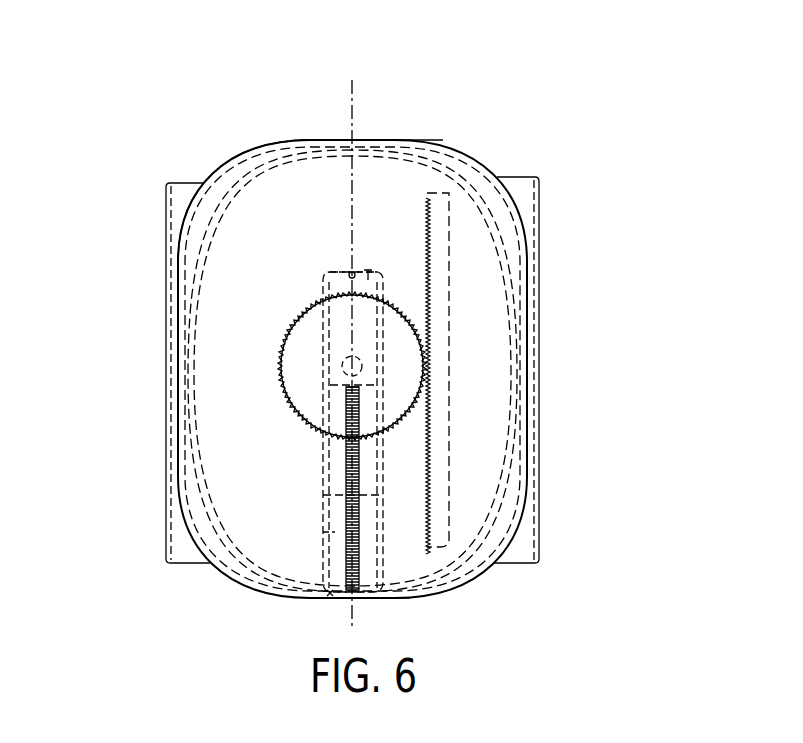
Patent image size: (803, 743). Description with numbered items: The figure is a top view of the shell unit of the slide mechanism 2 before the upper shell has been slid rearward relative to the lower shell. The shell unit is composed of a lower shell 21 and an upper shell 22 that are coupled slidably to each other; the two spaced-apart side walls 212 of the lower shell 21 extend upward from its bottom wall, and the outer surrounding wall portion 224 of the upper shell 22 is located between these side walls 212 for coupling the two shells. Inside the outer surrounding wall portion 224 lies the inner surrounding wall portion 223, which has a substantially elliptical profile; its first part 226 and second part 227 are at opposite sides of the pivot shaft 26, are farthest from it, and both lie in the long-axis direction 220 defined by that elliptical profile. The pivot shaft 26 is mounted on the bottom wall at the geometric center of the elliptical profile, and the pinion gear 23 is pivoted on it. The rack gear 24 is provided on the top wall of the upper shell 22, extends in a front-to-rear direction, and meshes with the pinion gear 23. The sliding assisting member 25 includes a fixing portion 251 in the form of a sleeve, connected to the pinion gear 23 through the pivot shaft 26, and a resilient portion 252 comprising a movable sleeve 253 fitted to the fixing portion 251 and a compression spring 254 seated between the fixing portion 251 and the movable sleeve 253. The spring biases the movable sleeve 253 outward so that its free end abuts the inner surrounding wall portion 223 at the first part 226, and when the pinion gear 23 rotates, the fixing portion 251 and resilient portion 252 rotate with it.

The slide mechanism 2 is at (486, 138).
The lower shell 21 is at (186, 190).
The upper shell 22 is at (384, 137).
The long-axis direction 220 is at (336, 340).
The inner surrounding wall portion 223 is at (208, 221).
The outer surrounding wall portion 224 is at (236, 152).
The second part 227 is at (340, 140).
The first part 226 is at (365, 600).
The side walls 212 is at (170, 443).
The rack gear 24 is at (427, 198).
The pinion gear 23 is at (297, 367).
The pivot shaft 26 is at (343, 356).
The sliding assisting member 25 is at (322, 546).
The fixing portion 251 is at (374, 266).
The resilient portion 252 is at (338, 506).
The movable sleeve 253 is at (337, 532).
The compression spring 254 is at (333, 599).